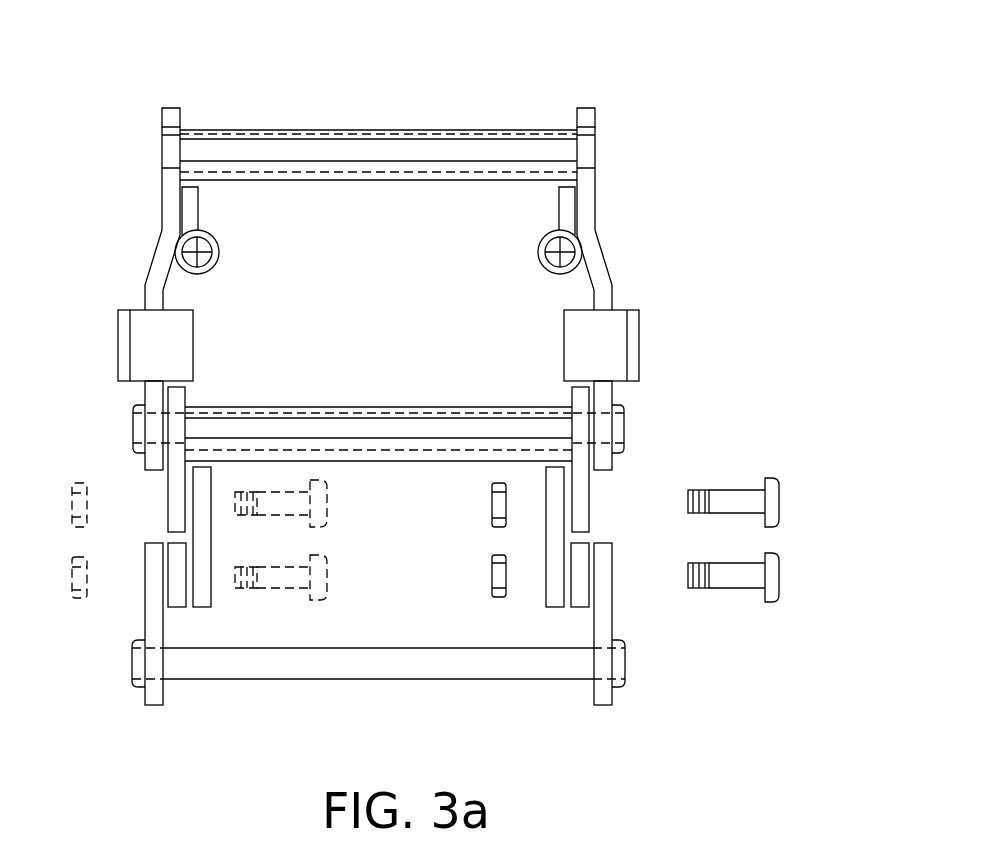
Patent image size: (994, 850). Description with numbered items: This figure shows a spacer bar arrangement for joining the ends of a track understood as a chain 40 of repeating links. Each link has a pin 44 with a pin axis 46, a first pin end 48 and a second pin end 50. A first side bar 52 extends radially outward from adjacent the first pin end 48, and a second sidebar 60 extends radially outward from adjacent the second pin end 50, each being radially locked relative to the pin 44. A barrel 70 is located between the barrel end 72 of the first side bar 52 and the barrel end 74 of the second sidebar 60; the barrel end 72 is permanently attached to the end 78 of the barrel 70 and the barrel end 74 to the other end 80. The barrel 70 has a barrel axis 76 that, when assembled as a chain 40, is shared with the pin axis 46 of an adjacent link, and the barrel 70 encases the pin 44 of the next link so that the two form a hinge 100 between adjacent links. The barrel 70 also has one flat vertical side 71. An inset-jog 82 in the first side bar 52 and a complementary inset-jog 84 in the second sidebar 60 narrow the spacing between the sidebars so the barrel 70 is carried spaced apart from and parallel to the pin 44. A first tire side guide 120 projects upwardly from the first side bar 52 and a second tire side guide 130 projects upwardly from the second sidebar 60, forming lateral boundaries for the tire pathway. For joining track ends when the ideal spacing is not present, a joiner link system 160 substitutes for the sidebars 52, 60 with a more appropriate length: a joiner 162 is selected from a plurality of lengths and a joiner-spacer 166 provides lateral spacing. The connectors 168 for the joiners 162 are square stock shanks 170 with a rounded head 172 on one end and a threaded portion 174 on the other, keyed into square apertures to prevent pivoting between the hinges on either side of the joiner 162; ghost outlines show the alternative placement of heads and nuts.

The chain 40 is at (447, 384).
The pin 44 is at (483, 680).
The pin axis 46 is at (131, 663).
The first pin end 48 is at (670, 663).
The second pin end 50 is at (135, 687).
The first side bar 52 is at (616, 291).
The second sidebar 60 is at (142, 291).
The barrel 70 is at (376, 128).
The flat vertical side 71 is at (200, 407).
The barrel end of first sidebar 72 is at (585, 107).
The barrel end of second sidebar 74 is at (170, 107).
The barrel axis 76 is at (160, 150).
The end of barrel 78 is at (570, 128).
The other end of barrel 80 is at (190, 128).
The inset-jog 82 is at (598, 247).
The complementary inset-jog 84 is at (160, 247).
The hinge 100 is at (330, 407).
The first tire side guide 120 is at (640, 345).
The second tire side guide 130 is at (118, 345).
The joiner link system 160 is at (428, 569).
The joiner 162 is at (548, 590).
The joiner-spacer 166 is at (583, 543).
The connector 168 is at (754, 505).
The shank 170 is at (758, 514).
The rounded head 172 is at (779, 496).
The threaded portion 174 is at (700, 490).